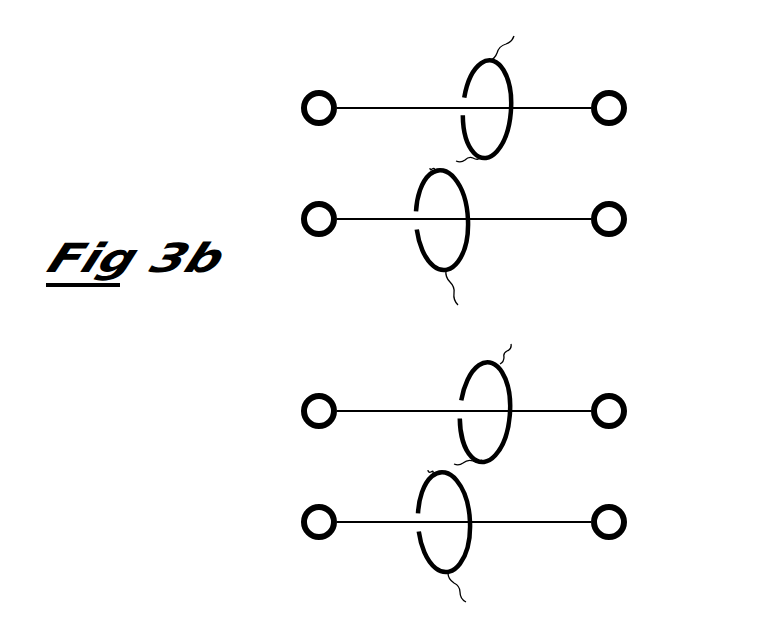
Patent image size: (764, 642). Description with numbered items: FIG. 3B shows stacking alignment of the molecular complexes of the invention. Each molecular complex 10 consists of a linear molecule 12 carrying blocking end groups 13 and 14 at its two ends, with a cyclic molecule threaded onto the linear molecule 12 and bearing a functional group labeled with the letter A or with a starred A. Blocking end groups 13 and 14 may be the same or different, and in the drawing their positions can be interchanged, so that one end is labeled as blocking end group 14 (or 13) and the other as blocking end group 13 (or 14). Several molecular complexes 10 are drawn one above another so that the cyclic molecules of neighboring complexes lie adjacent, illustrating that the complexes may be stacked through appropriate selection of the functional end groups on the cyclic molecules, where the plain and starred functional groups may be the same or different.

The molecular complex 10 is at (490, 321).
The linear molecule 12 is at (518, 221).
The blocking end group 13 is at (608, 126).
The blocking end group 14 is at (320, 126).